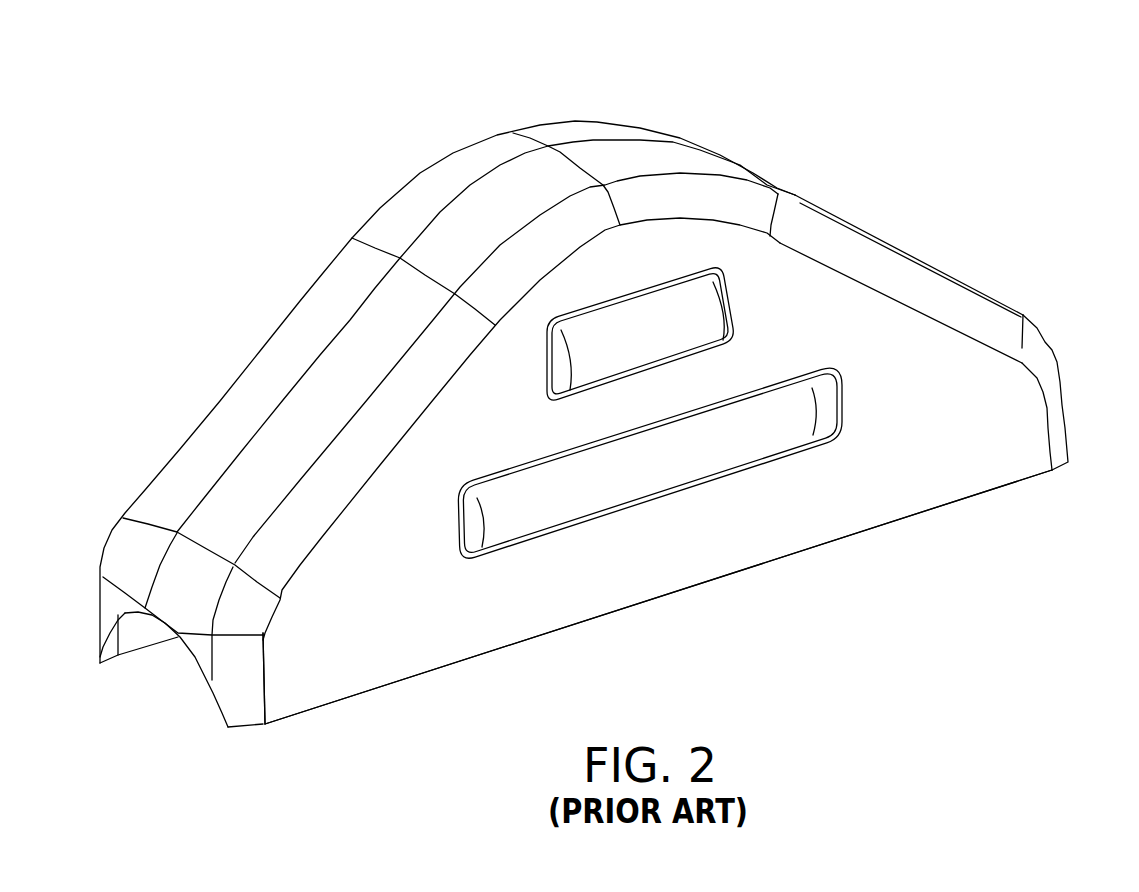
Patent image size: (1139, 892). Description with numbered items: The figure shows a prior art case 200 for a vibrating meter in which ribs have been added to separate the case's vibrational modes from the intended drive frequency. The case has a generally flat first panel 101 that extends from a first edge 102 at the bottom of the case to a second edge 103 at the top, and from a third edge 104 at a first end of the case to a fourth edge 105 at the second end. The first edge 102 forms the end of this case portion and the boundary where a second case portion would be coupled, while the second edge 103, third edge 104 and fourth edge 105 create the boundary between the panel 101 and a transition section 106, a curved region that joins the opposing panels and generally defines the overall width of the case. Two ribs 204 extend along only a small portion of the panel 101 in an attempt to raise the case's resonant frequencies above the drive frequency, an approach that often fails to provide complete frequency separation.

The prior art case 200 is at (616, 372).
The first panel 101 is at (1005, 383).
The first edge 102 is at (887, 525).
The second edge 103 is at (778, 243).
The third edge 104 is at (265, 680).
The fourth edge 105 is at (1047, 445).
The transition section 106 is at (306, 465).
The ribs 204 is at (710, 322).